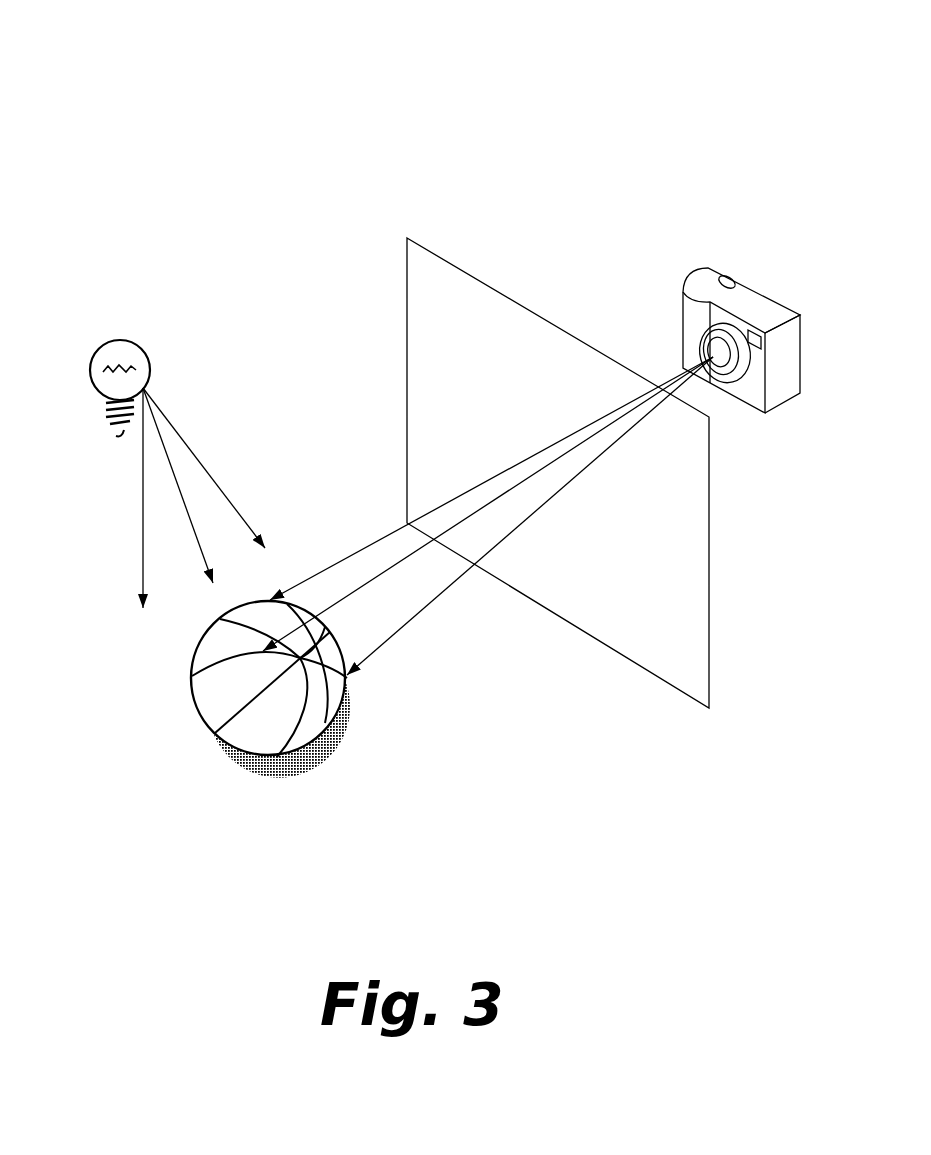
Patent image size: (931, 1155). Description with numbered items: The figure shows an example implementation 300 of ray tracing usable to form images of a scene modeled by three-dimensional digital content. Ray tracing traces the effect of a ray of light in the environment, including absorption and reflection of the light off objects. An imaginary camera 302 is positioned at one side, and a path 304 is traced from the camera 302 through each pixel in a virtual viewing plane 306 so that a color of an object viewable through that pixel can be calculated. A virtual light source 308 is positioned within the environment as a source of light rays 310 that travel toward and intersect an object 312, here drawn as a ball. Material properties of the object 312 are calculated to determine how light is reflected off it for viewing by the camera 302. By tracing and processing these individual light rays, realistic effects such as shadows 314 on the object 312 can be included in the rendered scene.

The example implementation of ray tracing 300 is at (200, 97).
The imaginary camera 302 is at (723, 263).
The path 304 is at (495, 628).
The virtual viewing plane 306 is at (458, 267).
The virtual light source 308 is at (100, 343).
The emitted light rays 310 is at (202, 420).
The object 312 is at (193, 680).
The shadows 314 is at (328, 760).